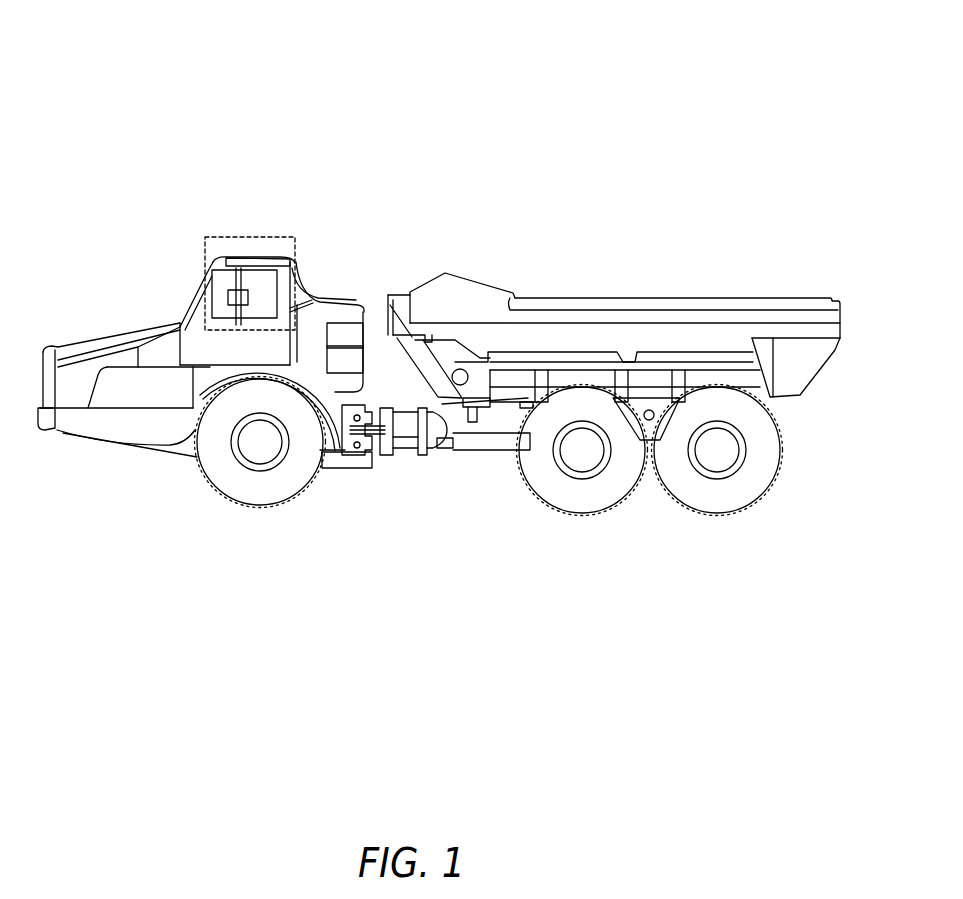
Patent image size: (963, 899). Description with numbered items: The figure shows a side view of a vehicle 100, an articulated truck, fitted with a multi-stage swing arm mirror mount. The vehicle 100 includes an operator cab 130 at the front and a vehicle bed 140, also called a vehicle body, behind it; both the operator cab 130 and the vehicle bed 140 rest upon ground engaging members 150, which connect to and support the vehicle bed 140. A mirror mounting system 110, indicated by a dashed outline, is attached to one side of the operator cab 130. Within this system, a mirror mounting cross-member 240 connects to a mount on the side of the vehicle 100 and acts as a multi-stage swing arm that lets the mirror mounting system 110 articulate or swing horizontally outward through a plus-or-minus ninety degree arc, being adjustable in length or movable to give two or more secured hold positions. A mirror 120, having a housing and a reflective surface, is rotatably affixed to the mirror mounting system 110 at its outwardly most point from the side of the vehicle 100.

The vehicle 100 is at (139, 124).
The mirror mounting system 110 is at (272, 237).
The mirror 120 is at (232, 297).
The operator cab 130 is at (203, 292).
The vehicle bed 140 is at (594, 298).
The ground engaging member 150 is at (265, 505).
The mirror mounting cross-member 240 is at (293, 262).